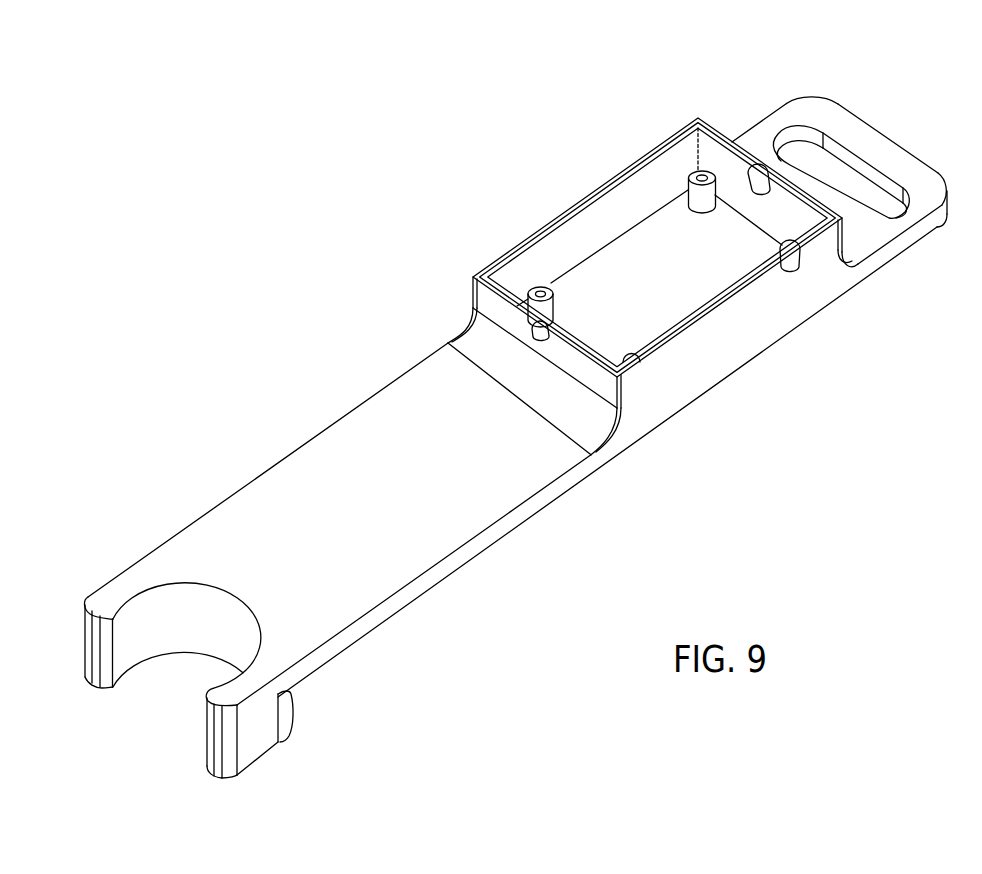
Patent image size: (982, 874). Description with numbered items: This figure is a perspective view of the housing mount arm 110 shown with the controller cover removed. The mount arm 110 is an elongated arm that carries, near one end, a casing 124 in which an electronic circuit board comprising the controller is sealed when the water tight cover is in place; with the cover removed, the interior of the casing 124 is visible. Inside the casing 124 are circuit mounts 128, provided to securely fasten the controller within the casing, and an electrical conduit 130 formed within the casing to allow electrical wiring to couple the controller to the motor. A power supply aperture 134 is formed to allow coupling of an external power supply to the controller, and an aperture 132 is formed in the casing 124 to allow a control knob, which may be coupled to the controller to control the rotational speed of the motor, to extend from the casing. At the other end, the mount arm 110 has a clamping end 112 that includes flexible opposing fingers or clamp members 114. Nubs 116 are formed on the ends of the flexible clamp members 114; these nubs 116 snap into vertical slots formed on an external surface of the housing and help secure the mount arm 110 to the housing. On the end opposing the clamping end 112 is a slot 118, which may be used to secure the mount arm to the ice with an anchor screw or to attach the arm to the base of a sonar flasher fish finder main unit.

The mount arm 110 is at (447, 520).
The clamping end 112 is at (197, 560).
The clamp members 114 is at (110, 597).
The nubs 116 is at (107, 680).
The slot 118 is at (805, 142).
The casing 124 is at (553, 215).
The circuit mounts 128 is at (697, 200).
The electrical conduit 130 is at (547, 335).
The aperture 132 is at (762, 195).
The power supply aperture 134 is at (787, 267).